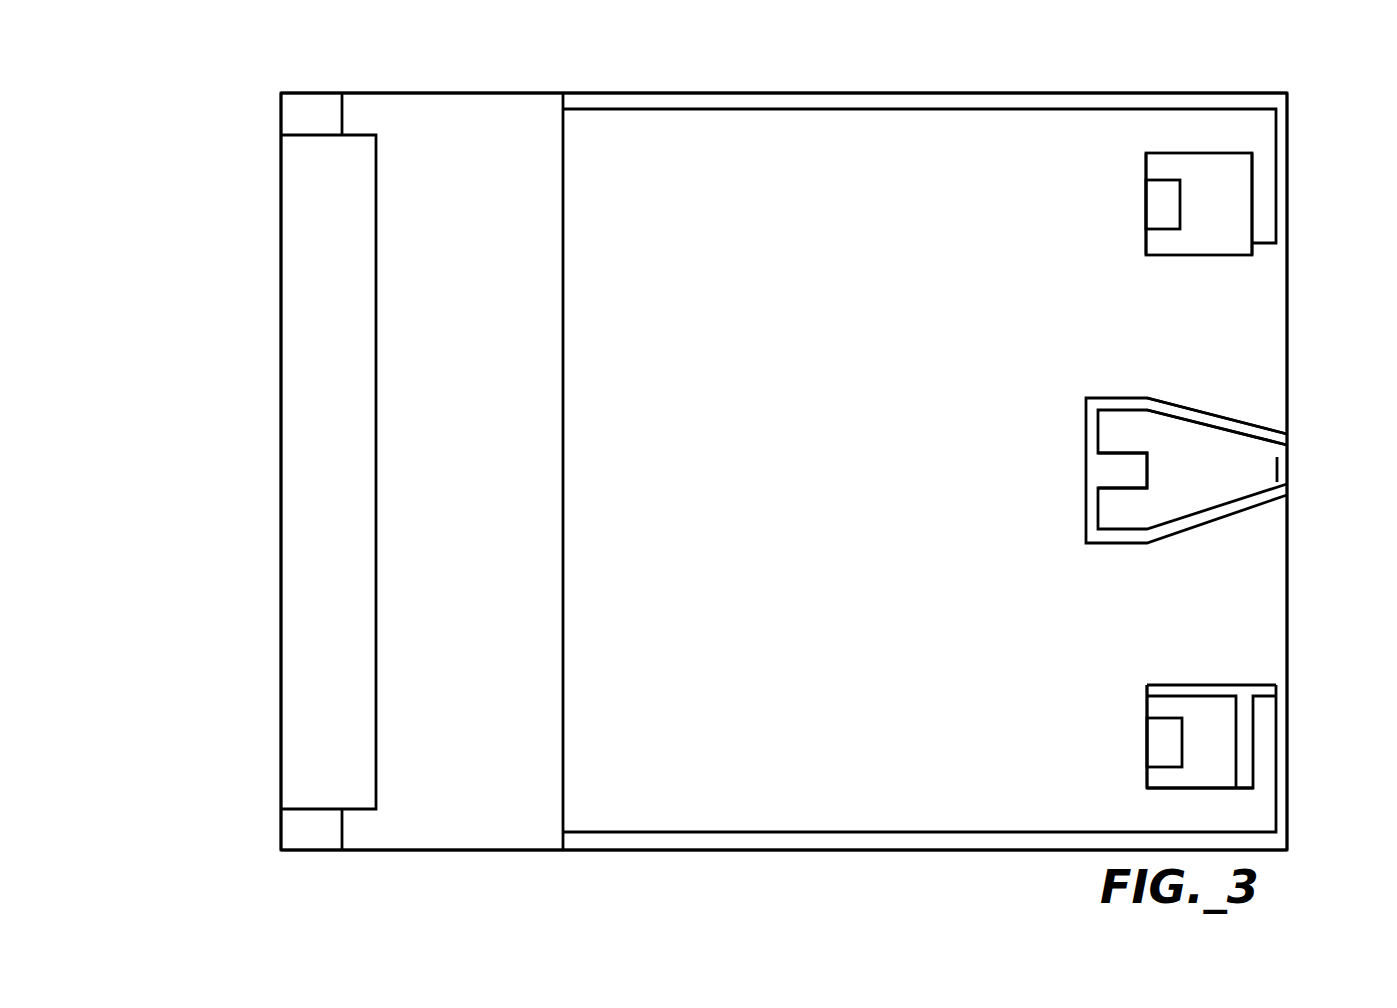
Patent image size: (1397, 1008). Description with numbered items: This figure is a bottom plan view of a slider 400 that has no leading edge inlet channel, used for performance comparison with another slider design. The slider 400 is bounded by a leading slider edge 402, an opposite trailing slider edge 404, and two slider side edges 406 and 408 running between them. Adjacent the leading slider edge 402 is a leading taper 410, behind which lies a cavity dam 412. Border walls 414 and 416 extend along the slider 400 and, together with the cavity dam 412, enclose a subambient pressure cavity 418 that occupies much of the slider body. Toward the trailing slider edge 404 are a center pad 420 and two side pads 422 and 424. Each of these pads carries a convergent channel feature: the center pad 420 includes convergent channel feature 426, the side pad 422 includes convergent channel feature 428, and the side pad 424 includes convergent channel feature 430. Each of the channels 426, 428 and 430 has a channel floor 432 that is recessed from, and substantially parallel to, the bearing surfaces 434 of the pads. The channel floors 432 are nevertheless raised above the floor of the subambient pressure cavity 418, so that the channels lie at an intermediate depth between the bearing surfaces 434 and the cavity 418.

The slider 400 is at (260, 73).
The leading slider edge 402 is at (280, 760).
The trailing slider edge 404 is at (1290, 610).
The slider side edge 406 is at (500, 92).
The slider side edge 408 is at (498, 852).
The leading taper 410 is at (303, 263).
The cavity dam 412 is at (460, 115).
The border wall 414 is at (925, 97).
The border wall 416 is at (763, 838).
The subambient pressure cavity 418 is at (758, 557).
The center pad 420 is at (1257, 418).
The side pad 422 is at (1187, 263).
The side pad 424 is at (1232, 682).
The convergent channel feature 426 is at (1108, 472).
The convergent channel feature 428 is at (1143, 209).
The convergent channel feature 430 is at (1143, 752).
The channel floor 432 is at (1158, 188).
The bearing surface 434 is at (1243, 212).